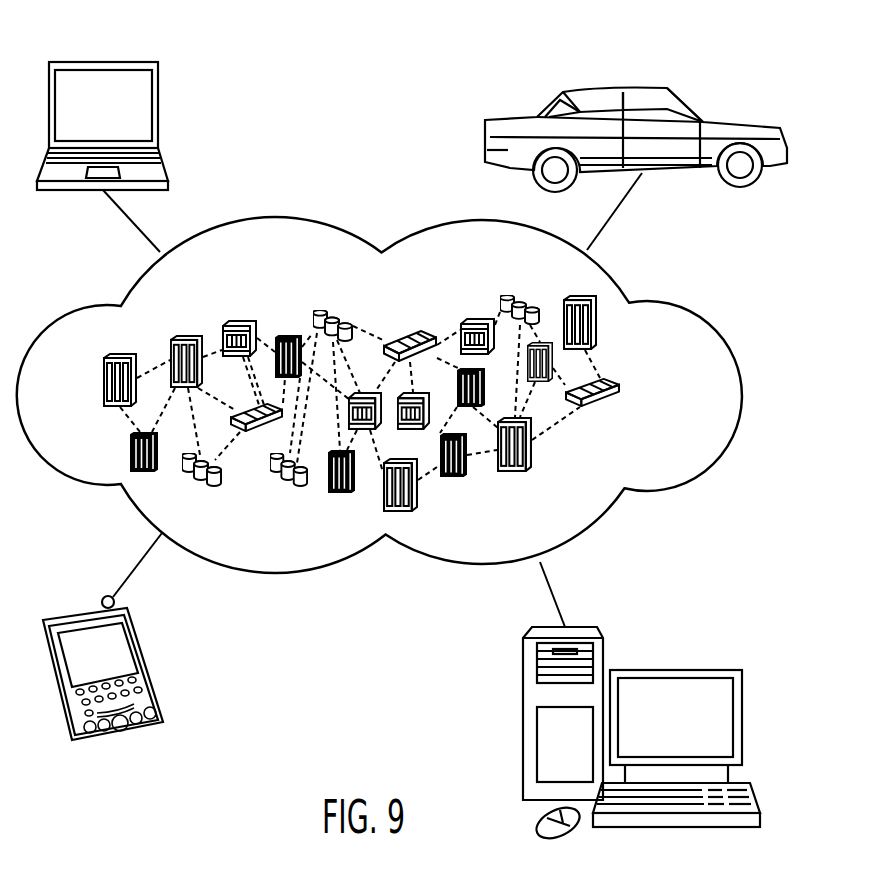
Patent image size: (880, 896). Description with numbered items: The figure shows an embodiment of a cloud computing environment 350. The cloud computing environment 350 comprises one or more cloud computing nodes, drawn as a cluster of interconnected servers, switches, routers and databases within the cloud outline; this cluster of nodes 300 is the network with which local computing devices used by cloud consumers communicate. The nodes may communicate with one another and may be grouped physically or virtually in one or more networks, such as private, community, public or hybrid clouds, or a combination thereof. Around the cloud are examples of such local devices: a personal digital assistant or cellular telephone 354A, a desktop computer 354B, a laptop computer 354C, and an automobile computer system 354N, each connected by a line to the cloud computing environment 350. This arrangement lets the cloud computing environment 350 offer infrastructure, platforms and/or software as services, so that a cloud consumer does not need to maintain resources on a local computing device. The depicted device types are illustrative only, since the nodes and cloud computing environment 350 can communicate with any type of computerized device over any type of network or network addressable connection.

The network 300 is at (636, 394).
The cloud computing environment 350 is at (687, 303).
The personal digital assistant (PDA) or cellular telephone 354A is at (85, 612).
The desktop computer 354B is at (674, 670).
The laptop computer 354C is at (103, 62).
The automobile computer system 354N is at (620, 87).